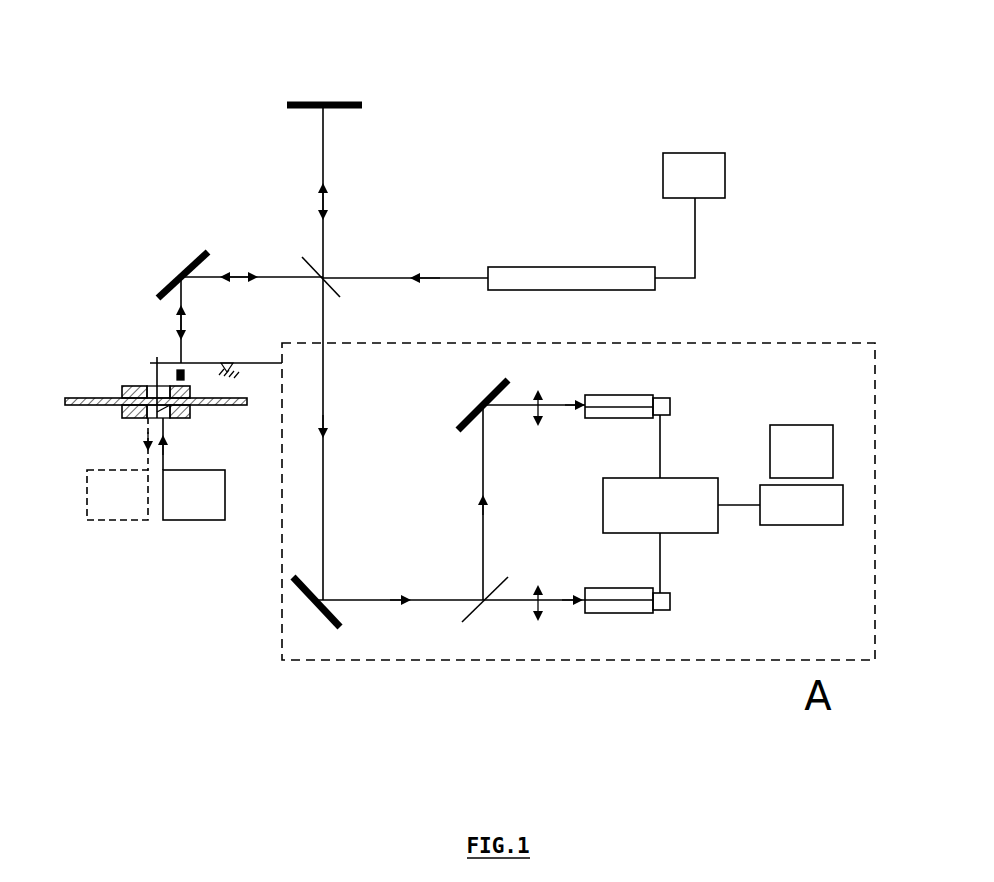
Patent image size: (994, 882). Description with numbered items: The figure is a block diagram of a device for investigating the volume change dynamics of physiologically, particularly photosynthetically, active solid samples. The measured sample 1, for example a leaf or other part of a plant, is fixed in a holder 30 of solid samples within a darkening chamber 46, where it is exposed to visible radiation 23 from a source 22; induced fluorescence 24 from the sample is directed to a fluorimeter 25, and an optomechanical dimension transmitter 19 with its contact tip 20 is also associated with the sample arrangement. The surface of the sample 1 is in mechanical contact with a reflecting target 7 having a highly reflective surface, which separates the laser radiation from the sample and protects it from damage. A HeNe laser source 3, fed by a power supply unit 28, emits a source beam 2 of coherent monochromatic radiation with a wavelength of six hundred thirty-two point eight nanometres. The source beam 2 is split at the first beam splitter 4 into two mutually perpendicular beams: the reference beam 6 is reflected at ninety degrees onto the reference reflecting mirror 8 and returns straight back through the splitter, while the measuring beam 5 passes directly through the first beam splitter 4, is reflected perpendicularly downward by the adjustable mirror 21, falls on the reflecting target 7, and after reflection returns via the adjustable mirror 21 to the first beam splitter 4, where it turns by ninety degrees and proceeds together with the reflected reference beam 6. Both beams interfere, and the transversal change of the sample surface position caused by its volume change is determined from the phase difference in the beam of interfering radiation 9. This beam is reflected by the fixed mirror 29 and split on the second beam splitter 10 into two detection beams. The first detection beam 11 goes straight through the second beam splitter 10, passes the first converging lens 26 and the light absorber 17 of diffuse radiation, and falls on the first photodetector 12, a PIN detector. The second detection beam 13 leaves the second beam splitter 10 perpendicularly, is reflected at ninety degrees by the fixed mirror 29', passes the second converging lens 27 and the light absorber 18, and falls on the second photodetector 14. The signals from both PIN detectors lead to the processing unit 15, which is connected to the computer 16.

The measured sample 1 is at (80, 395).
The source beam of a monochromatic coherent radiation 2 is at (428, 275).
The laser source of radiation 3 is at (557, 280).
The first beam splitter 4 is at (322, 289).
The measuring beam 5 is at (237, 275).
The reference beam 6 is at (325, 203).
The reflecting target 7 is at (180, 358).
The reference reflecting mirror 8 is at (340, 100).
The beam of interfering radiation 9 is at (325, 420).
The second beam splitter 10 is at (480, 613).
The first detection beam 11 is at (565, 604).
The first photodetector 12 is at (672, 607).
The second detection beam 13 is at (486, 500).
The second photodetector 14 is at (672, 405).
The processing unit 15 is at (681, 505).
The computer, PC 16 is at (801, 475).
The light absorber of the first detector 17 is at (627, 614).
The light absorber of the second detector 18 is at (637, 402).
The optomechanical dimension transmitter 19 is at (205, 363).
The contact tip of the optomechanical dimension transmitter 20 is at (157, 385).
The adjustable mirror 21 is at (185, 265).
The source of VIS radiation 22 is at (194, 495).
The visible radiation 23 is at (183, 444).
The induced fluorescence 24 is at (124, 444).
The fluorimeter 25 is at (117, 495).
The first converging lens 26 is at (535, 606).
The second converging lens 27 is at (545, 398).
The power supply unit of the laser source 28 is at (715, 178).
The fixed mirror 29 is at (315, 616).
The fixed mirror 29' is at (501, 396).
The holder of solid samples 30 is at (122, 418).
The darkening chamber 46 is at (190, 418).